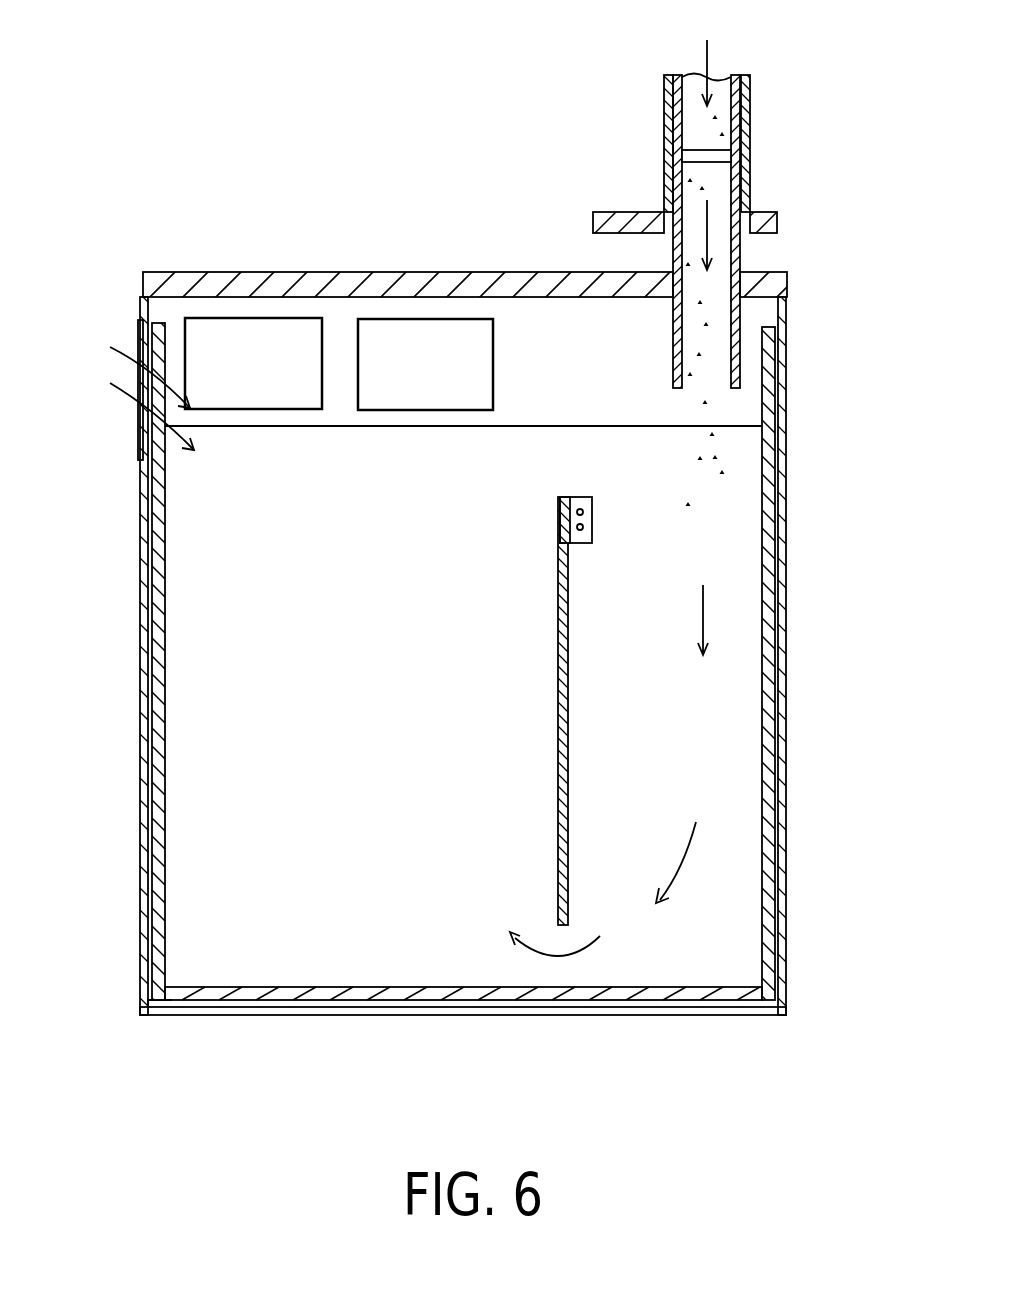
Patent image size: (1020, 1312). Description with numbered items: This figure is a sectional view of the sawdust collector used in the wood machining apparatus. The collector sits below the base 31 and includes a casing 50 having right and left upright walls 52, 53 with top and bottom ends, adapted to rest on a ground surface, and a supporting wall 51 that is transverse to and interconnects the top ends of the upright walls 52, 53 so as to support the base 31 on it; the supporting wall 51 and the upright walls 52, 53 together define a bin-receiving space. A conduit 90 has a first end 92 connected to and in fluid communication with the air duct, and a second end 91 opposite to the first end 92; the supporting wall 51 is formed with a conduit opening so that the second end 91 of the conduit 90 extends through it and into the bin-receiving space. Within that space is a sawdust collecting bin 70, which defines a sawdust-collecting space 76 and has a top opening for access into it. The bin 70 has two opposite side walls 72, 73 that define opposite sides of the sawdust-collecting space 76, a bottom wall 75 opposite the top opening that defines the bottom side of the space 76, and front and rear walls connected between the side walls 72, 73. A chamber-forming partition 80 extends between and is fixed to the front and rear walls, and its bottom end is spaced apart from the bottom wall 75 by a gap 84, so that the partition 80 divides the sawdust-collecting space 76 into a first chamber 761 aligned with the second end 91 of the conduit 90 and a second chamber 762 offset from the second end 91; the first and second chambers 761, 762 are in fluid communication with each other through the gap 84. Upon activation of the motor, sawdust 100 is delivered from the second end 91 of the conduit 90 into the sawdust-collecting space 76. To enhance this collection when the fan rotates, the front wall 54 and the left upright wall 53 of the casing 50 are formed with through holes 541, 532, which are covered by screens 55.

The base 31 is at (620, 218).
The casing 50 is at (466, 637).
The supporting wall 51 is at (326, 272).
The right upright wall 52 is at (780, 833).
The left upright wall 53 is at (143, 765).
The through hole 532 is at (140, 347).
The front wall 54 is at (528, 316).
The through hole 541 is at (277, 320).
The screens 55 is at (228, 335).
The sawdust collecting bin 70 is at (385, 1013).
The side wall 72 is at (767, 887).
The side wall 73 is at (153, 877).
The bottom wall 75 is at (507, 1000).
The sawdust-collecting space 76 is at (463, 724).
The first chamber 761 is at (718, 678).
The second chamber 762 is at (205, 660).
The chamber-forming partition 80 is at (550, 825).
The gap 84 is at (560, 960).
The conduit 90 is at (758, 112).
The second end 91 is at (737, 253).
The first end 92 is at (750, 160).
The sawdust 100 is at (698, 108).